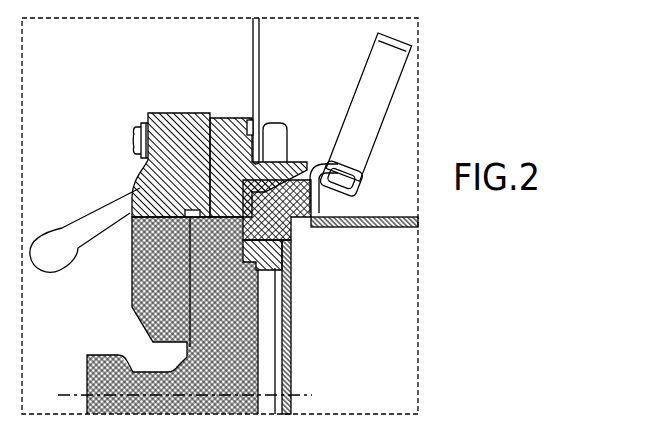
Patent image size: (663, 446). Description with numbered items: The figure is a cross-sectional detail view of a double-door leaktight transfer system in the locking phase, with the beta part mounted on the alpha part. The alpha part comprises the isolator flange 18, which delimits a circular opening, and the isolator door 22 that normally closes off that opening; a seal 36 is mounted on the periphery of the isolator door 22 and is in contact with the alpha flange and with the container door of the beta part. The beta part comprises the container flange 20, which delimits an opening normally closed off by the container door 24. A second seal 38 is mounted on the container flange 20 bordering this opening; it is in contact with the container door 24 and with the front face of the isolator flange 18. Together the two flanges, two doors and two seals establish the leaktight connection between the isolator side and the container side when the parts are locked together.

The isolator flange 18 is at (185, 113).
The container flange 20 is at (300, 232).
The isolator door 22 is at (172, 367).
The container door 24 is at (292, 308).
The seal 36 is at (132, 269).
The seal 38 is at (284, 272).